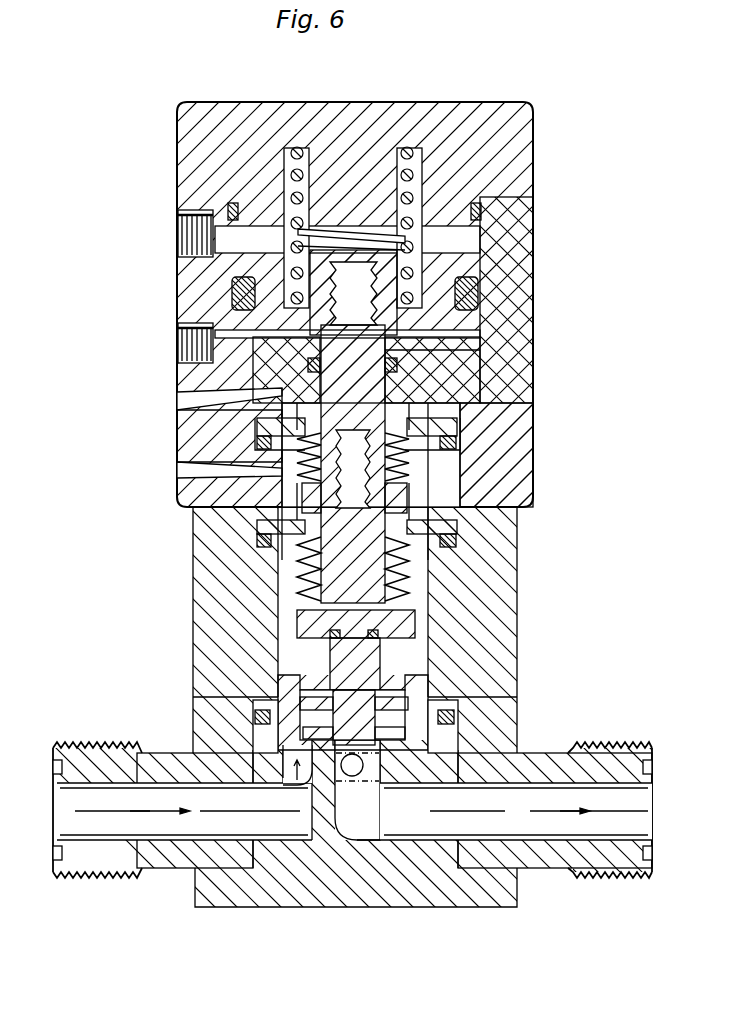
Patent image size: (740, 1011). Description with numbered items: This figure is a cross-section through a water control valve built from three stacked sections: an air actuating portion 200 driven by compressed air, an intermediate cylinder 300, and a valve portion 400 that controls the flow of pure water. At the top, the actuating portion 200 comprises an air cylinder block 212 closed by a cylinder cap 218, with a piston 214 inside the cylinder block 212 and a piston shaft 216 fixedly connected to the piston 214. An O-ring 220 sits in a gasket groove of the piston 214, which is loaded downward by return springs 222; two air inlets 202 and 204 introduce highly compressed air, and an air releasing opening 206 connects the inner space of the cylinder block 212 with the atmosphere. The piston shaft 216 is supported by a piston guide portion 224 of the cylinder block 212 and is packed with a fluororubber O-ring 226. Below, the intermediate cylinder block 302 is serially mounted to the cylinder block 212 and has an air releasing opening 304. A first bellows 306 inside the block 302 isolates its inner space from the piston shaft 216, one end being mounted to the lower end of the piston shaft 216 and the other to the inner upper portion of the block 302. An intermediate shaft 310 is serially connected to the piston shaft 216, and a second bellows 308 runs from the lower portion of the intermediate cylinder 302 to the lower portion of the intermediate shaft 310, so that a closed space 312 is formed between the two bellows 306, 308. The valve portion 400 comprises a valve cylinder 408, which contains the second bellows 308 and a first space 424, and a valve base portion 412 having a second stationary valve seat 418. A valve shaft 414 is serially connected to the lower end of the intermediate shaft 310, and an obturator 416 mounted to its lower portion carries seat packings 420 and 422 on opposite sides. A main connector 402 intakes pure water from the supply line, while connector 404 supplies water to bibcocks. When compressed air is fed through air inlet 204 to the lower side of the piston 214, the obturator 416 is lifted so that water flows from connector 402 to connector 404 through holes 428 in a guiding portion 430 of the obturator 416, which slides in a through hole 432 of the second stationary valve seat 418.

The air actuating portion 200 is at (370, 505).
The air inlet 202 is at (215, 239).
The air inlet 204 is at (215, 349).
The air releasing opening 206 is at (228, 409).
The air cylinder block 212 is at (498, 307).
The piston 214 is at (505, 247).
The piston shaft 216 is at (468, 353).
The cylinder cap 218 is at (497, 179).
The O-ring 220 is at (240, 293).
The return springs 222 is at (290, 164).
The piston guide portion 224 is at (460, 381).
The O-ring 226 is at (310, 366).
The intermediate cylinder 300 is at (351, 426).
The intermediate cylinder block 302 is at (505, 441).
The air releasing opening 304 is at (250, 472).
The first bellows 306 is at (433, 471).
The second bellows 308 is at (297, 575).
The intermediate shaft 310 is at (395, 553).
The closed space 312 is at (420, 498).
The valve portion 400 is at (370, 505).
The main connector 402 is at (105, 880).
The connector 404 is at (630, 880).
The valve cylinder 408 is at (487, 629).
The valve base portion 412 is at (505, 893).
The valve shaft 414 is at (365, 663).
The obturator 416 is at (395, 716).
The second stationary valve seat 418 is at (283, 755).
The seat packing 420 is at (300, 690).
The seat packing 422 is at (318, 724).
The first space 424 is at (300, 547).
The holes 428 is at (334, 760).
The guiding portion 430 is at (364, 776).
The through hole 432 is at (385, 790).